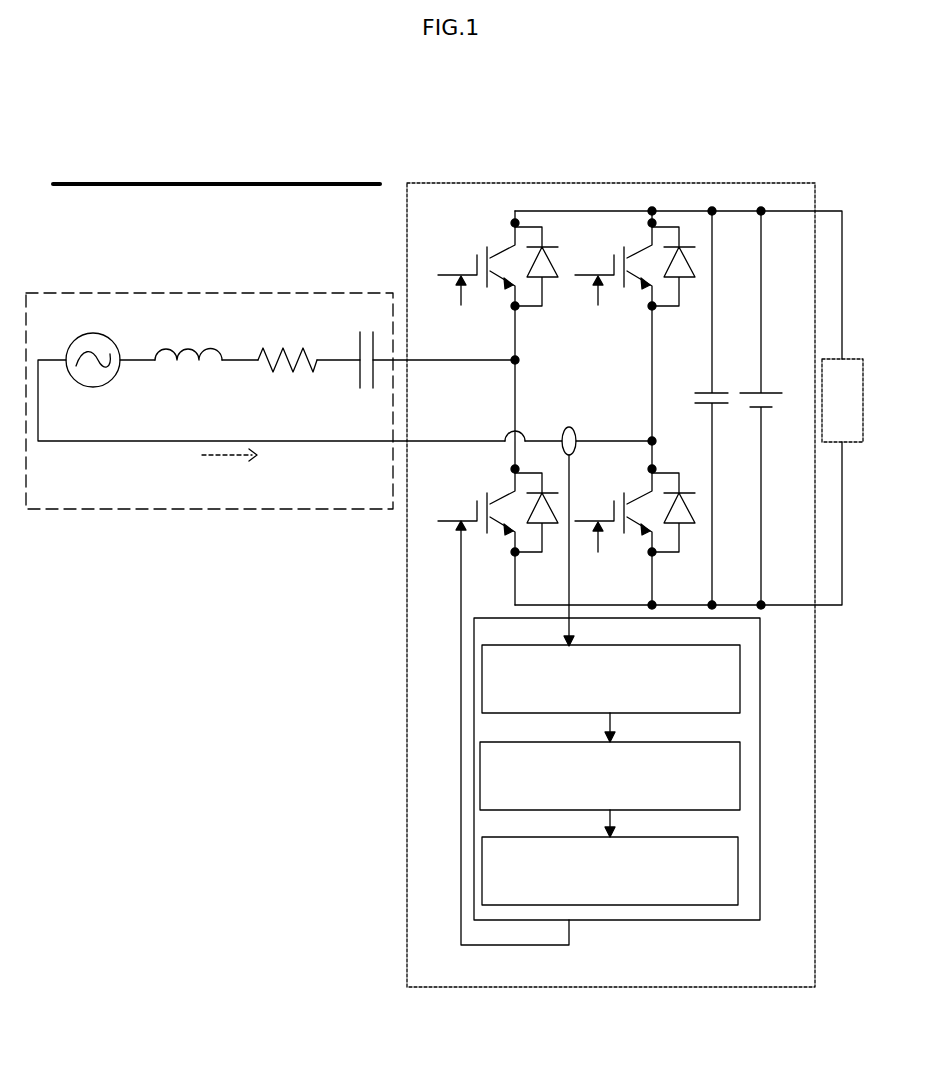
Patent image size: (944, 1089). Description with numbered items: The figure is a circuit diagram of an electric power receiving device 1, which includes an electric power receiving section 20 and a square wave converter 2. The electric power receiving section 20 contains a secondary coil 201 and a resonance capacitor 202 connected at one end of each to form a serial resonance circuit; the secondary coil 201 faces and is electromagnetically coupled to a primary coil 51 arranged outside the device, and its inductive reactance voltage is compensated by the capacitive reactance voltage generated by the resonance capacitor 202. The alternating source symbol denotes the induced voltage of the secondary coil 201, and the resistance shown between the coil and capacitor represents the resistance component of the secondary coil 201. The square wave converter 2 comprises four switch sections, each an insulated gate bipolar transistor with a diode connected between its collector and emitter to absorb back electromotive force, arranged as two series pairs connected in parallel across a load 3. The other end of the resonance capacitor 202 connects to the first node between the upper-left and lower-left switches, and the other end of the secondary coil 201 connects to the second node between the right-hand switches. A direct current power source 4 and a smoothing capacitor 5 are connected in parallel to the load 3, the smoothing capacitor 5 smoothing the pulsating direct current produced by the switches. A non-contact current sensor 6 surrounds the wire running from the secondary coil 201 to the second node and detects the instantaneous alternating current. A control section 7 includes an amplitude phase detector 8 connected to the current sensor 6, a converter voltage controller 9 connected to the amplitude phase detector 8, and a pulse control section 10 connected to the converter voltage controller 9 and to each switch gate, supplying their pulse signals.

The electric power receiving device 1 is at (704, 132).
The square wave converter 2 is at (775, 183).
The load 3 is at (863, 410).
The direct current power source 4 is at (775, 392).
The smoothing capacitor 5 is at (728, 392).
The current sensor 6 is at (569, 427).
The control section 7 is at (760, 735).
The amplitude phase detector 8 is at (740, 678).
The converter voltage controller 9 is at (740, 772).
The pulse control section 10 is at (738, 866).
The electric power receiving section 20 is at (282, 293).
The primary coil 51 is at (353, 182).
The secondary coil 201 is at (190, 345).
The resonance capacitor 202 is at (355, 353).